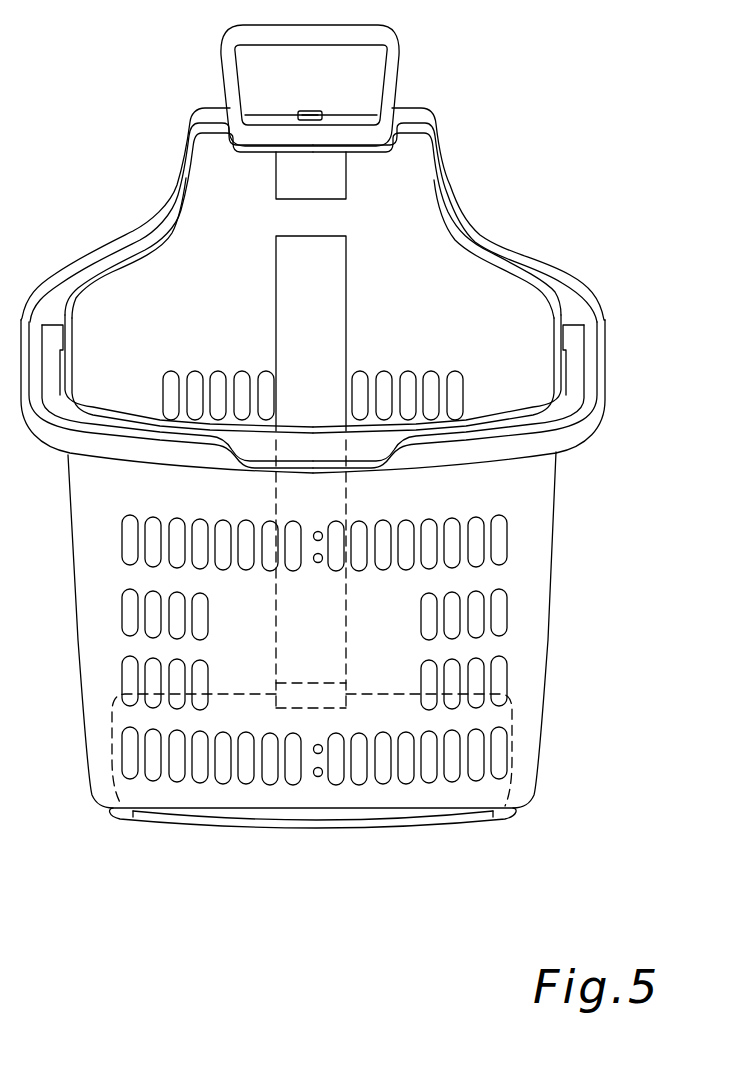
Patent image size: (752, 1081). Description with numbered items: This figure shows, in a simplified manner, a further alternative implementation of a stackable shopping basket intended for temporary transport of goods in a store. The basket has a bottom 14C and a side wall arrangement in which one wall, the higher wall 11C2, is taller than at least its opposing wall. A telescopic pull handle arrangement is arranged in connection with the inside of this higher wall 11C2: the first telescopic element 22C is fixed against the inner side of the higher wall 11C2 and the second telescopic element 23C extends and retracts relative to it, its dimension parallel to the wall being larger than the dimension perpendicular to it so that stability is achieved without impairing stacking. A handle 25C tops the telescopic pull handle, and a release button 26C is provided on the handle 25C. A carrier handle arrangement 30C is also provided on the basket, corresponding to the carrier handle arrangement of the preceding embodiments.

The higher wall 11C2 is at (417, 157).
The bottom 14C is at (403, 802).
The first telescopic element 22C is at (312, 178).
The second telescopic element 23C is at (288, 248).
The handle 25C is at (383, 40).
The release button 26C is at (307, 112).
The carrier handle arrangement 30C is at (546, 410).